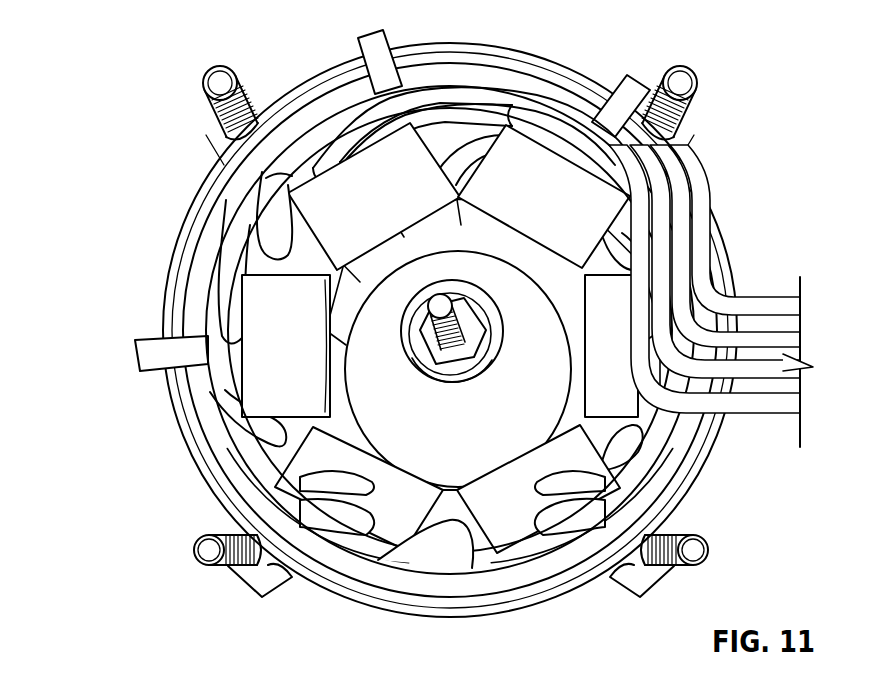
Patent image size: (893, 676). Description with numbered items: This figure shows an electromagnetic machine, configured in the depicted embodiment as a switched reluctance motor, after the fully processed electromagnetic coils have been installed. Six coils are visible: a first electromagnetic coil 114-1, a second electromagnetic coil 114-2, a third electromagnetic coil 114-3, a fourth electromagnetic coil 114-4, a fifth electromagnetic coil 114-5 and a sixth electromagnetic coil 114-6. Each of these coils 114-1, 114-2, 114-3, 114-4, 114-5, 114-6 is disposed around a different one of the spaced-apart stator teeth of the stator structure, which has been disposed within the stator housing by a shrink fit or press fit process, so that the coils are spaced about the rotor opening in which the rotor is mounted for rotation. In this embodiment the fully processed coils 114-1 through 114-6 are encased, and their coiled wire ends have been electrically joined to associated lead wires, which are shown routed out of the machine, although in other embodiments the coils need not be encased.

The electromagnetic coil 114-1 is at (338, 203).
The electromagnetic coil 114-2 is at (547, 187).
The electromagnetic coil 114-3 is at (613, 338).
The electromagnetic coil 114-4 is at (538, 478).
The electromagnetic coil 114-5 is at (370, 483).
The electromagnetic coil 114-6 is at (282, 347).